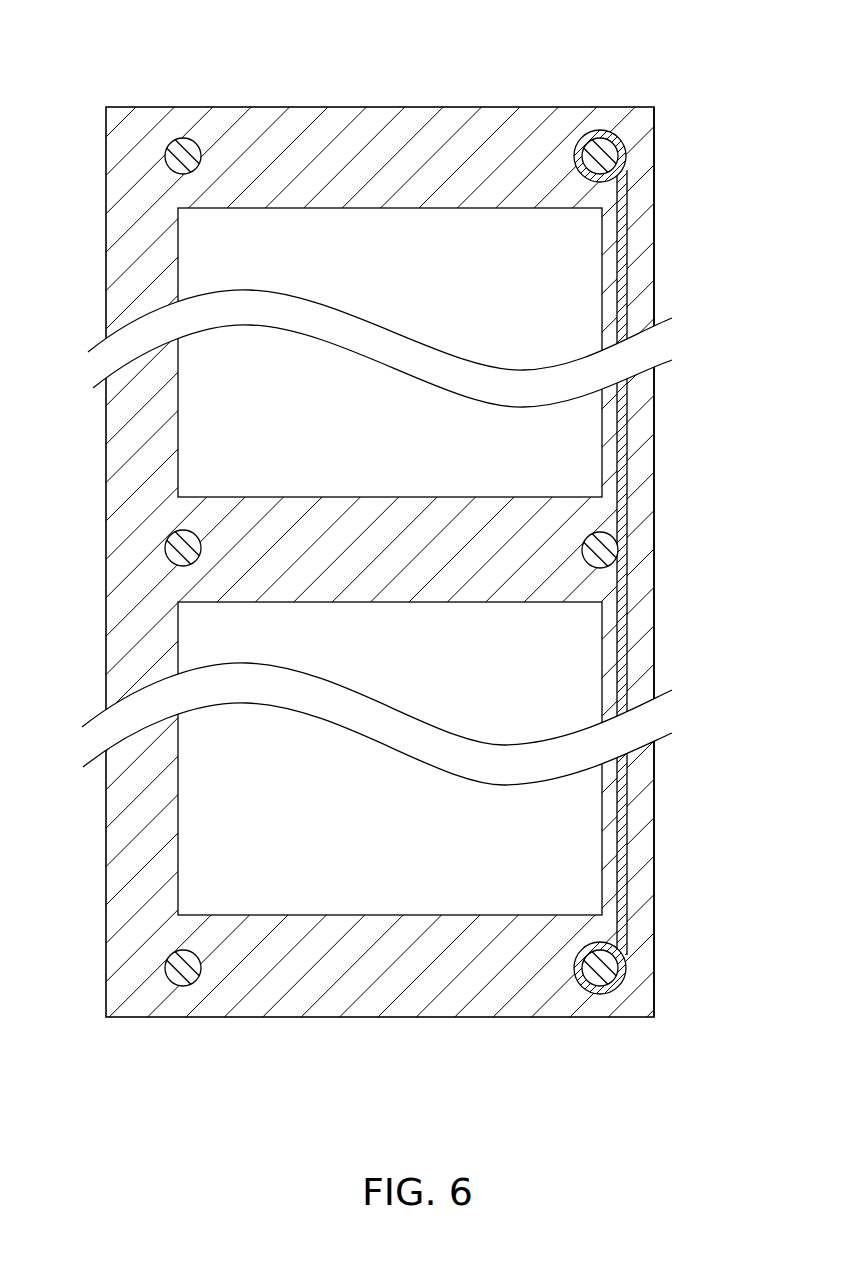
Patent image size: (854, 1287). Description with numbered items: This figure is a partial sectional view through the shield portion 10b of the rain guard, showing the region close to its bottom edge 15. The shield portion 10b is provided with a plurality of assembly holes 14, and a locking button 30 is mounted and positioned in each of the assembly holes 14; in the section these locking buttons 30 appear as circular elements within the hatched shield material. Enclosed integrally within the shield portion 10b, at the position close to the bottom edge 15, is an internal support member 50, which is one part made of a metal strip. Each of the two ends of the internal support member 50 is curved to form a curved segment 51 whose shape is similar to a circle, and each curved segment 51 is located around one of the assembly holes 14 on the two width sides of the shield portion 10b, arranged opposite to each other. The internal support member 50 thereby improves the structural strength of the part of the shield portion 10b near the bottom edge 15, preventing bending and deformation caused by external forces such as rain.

The shield portion 10b is at (360, 1017).
The assembly hole 14 is at (622, 166).
The bottom edge 15 is at (655, 805).
The locking button 30 is at (182, 152).
The internal support member 50 is at (632, 655).
The curved segment 51 is at (586, 142).